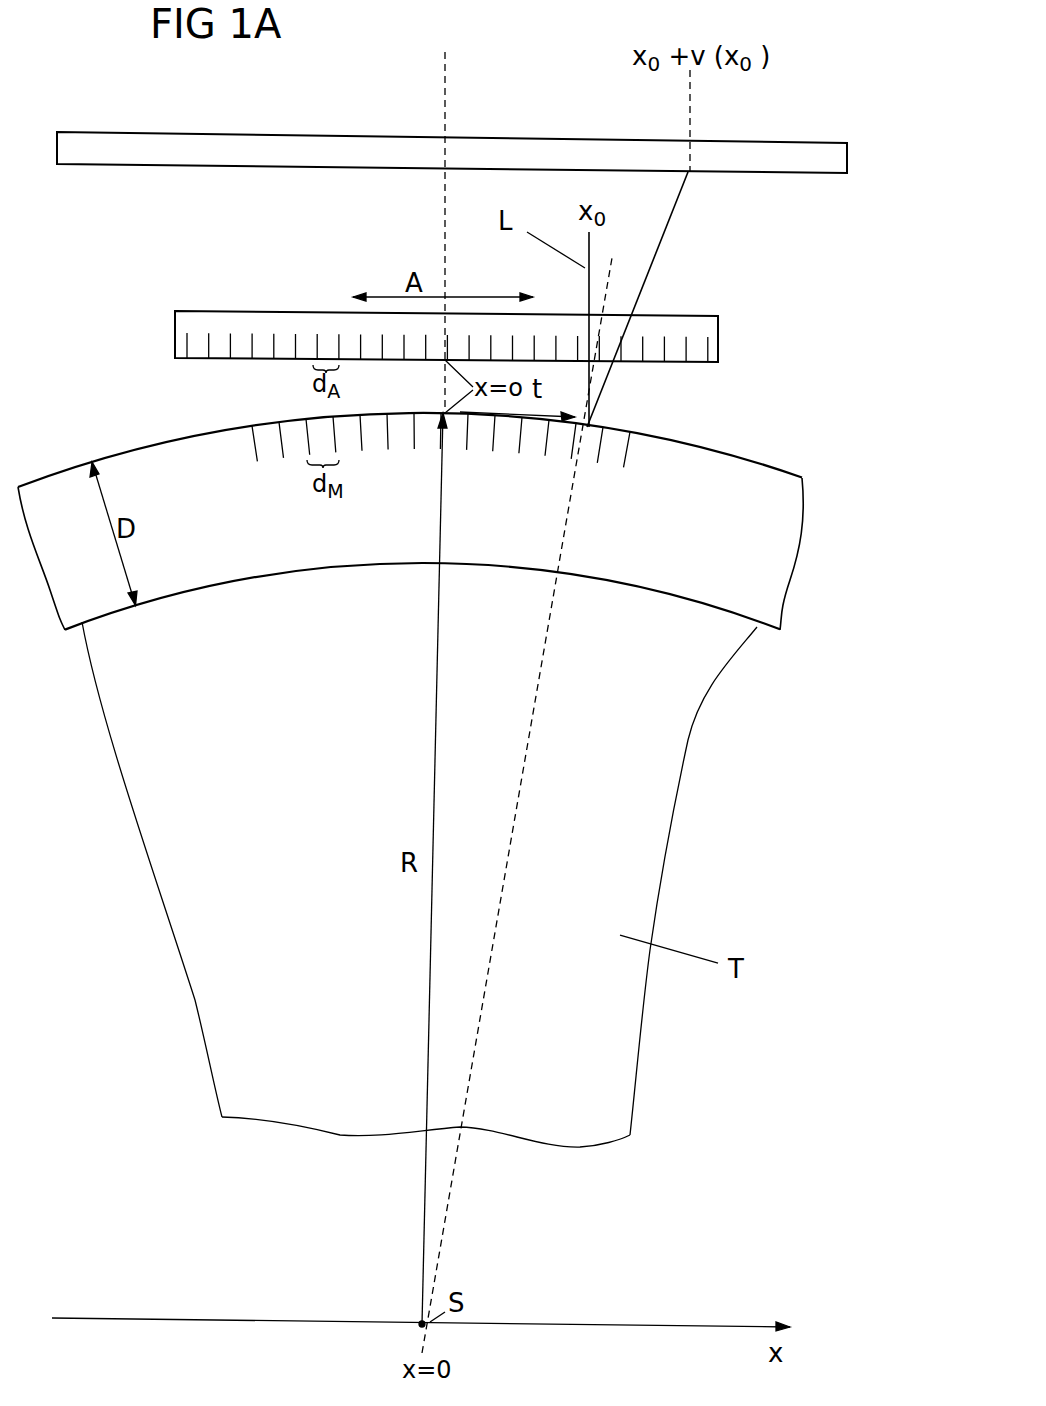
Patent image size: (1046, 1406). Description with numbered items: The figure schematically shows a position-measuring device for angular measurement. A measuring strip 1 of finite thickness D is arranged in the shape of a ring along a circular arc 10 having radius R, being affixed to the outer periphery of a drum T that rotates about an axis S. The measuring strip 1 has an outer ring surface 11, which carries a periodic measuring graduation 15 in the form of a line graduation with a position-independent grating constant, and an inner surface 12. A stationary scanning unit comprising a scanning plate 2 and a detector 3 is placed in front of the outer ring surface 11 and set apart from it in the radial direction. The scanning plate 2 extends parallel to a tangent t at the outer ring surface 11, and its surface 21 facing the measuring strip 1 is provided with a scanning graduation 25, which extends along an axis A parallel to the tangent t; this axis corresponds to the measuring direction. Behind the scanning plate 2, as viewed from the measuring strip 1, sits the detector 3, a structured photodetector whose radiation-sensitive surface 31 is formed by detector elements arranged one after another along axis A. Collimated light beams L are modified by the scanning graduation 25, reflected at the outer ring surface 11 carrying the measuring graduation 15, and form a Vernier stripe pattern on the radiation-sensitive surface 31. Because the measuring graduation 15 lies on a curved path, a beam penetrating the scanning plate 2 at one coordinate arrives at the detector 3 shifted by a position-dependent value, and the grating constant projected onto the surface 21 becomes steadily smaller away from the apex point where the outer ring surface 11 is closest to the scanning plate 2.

The measuring strip 1 is at (452, 521).
The scanning plate 2 is at (464, 373).
The detector 3 is at (848, 160).
The circular arc 10 is at (435, 521).
The outer ring surface 11 is at (708, 448).
The inner surface 12 is at (682, 605).
The periodic measuring graduation 15 is at (628, 453).
The surface of scanning plate 21 is at (193, 358).
The scanning graduation 25 is at (270, 338).
The radiation-sensitive surface 31 is at (770, 177).